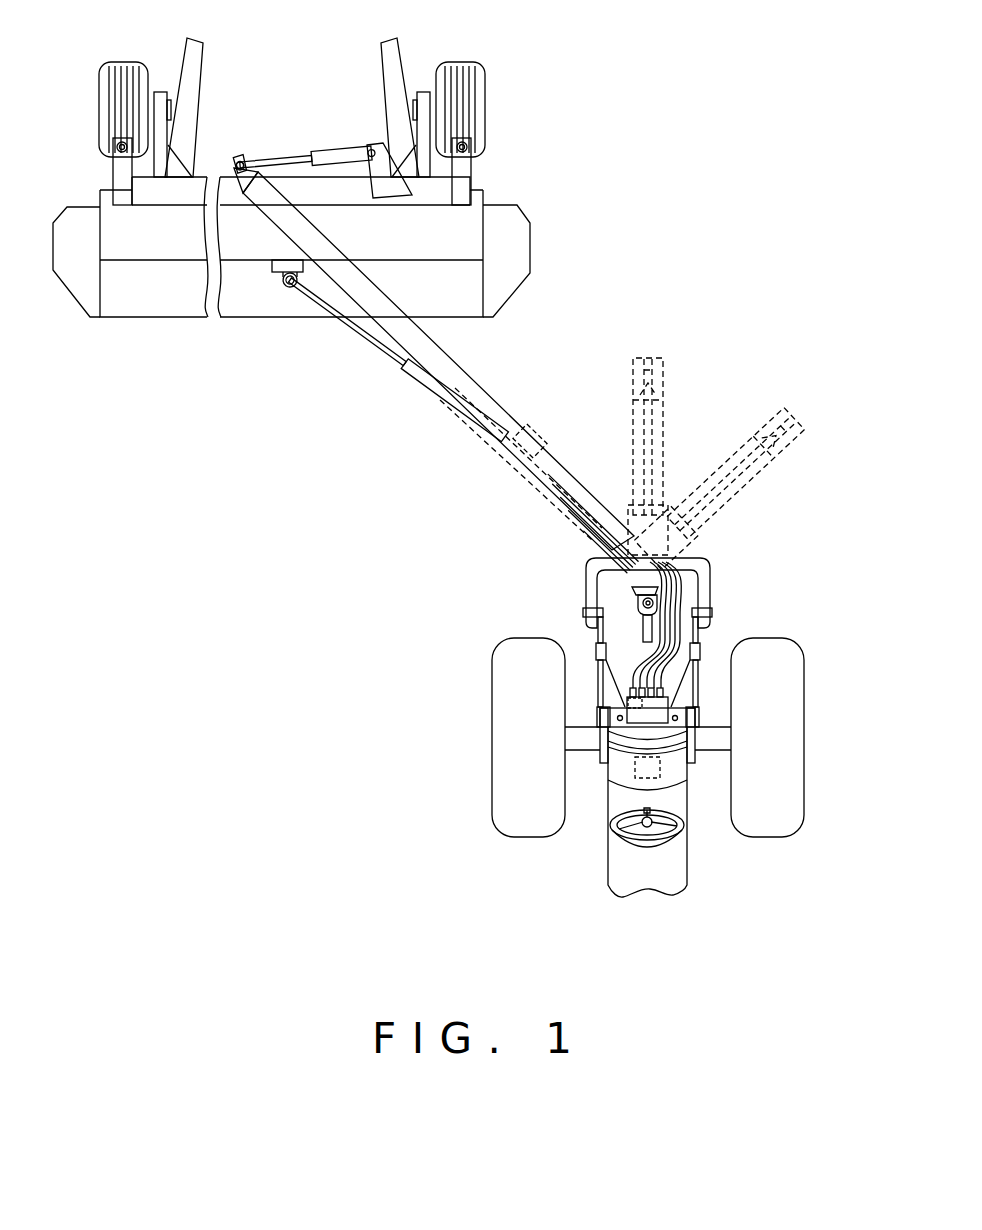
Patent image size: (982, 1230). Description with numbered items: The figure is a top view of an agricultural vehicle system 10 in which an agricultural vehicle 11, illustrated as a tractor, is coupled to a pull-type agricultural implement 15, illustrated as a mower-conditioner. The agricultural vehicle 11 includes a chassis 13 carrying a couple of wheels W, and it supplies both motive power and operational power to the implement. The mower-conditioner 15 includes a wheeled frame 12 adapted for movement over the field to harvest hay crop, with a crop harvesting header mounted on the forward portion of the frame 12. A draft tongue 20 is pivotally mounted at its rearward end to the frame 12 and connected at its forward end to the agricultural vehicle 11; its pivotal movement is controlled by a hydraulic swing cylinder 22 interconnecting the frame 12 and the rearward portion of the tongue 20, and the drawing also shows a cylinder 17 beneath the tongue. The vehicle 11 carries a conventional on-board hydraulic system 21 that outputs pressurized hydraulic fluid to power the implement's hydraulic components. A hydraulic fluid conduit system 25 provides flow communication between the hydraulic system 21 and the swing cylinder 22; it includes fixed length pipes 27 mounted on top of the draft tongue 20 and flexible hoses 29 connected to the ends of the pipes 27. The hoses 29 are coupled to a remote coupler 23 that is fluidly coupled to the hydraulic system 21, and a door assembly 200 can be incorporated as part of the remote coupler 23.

The agricultural vehicle system 10 is at (563, 125).
The agricultural vehicle 11 is at (690, 897).
The wheeled frame 12 is at (435, 190).
The chassis 13 is at (607, 817).
The agricultural implement 15 is at (213, 340).
The lift cylinder 17 is at (418, 377).
The draft tongue 20 is at (460, 377).
The hydraulic system 21 is at (657, 778).
The hydraulic swing cylinder 22 is at (347, 153).
The remote coupler 23 is at (672, 698).
The hydraulic fluid conduit system 25 is at (625, 588).
The fixed length pipes 27 is at (558, 497).
The flexible hoses 29 is at (682, 593).
The door assembly 200 is at (620, 702).
The wheels W is at (502, 813).